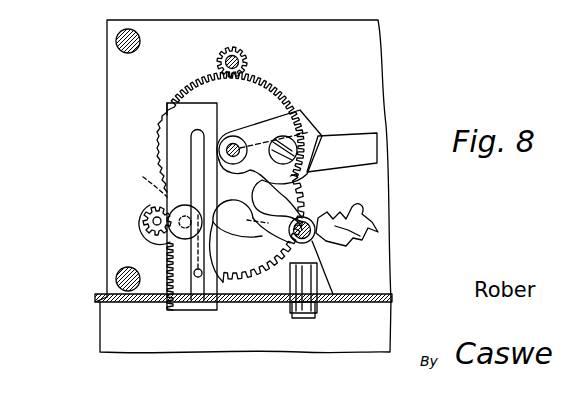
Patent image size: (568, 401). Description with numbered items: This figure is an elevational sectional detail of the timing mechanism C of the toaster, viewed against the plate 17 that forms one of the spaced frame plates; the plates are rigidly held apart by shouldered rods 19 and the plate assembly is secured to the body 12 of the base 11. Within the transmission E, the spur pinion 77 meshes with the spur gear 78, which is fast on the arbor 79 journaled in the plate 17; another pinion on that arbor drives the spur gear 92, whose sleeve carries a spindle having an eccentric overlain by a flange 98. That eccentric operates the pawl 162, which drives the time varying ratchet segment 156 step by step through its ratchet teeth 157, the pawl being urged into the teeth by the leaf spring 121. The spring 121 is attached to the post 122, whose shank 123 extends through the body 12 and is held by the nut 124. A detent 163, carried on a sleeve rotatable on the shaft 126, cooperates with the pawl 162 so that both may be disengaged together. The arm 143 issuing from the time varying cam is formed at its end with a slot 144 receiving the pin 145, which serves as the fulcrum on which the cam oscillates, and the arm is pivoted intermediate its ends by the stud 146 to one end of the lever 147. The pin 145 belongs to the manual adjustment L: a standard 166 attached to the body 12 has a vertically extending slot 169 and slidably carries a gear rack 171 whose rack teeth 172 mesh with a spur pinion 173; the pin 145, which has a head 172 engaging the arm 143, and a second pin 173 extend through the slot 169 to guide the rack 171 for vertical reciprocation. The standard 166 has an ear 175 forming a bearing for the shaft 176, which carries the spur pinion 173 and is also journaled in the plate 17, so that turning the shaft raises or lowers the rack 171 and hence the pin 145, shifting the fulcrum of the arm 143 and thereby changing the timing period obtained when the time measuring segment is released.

The base 11 is at (382, 317).
The body of base 12 is at (380, 293).
The plate 17 is at (107, 80).
The shouldered rod 19 is at (110, 37).
The manual adjustment L is at (167, 103).
The transmission E is at (194, 80).
The timing mechanism C is at (346, 224).
The spur pinion 77 is at (238, 57).
The spur gear 78 is at (262, 80).
The arbor 79 is at (236, 147).
The spur gear 92 is at (240, 272).
The flange 98 is at (237, 207).
The leaf spring 121 is at (318, 290).
The post 122 is at (298, 267).
The shank 123 is at (305, 318).
The nut 124 is at (320, 266).
The shaft 126 is at (290, 265).
The arm 143 is at (307, 113).
The slot 144 is at (168, 245).
The pin 145 is at (142, 179).
The stud 146 is at (320, 130).
The lever 147 is at (364, 147).
The time varying ratchet segment 156 is at (373, 218).
The ratchet teeth 157 is at (368, 229).
The pawl 162 is at (324, 245).
The detent 163 is at (311, 220).
The standard 166 is at (167, 107).
The slot 169 is at (214, 128).
The gear rack 171 is at (187, 297).
The rack teeth 172 is at (226, 203).
The spur pinion 173 is at (143, 210).
The ear 175 is at (140, 223).
The shaft 176 is at (153, 233).